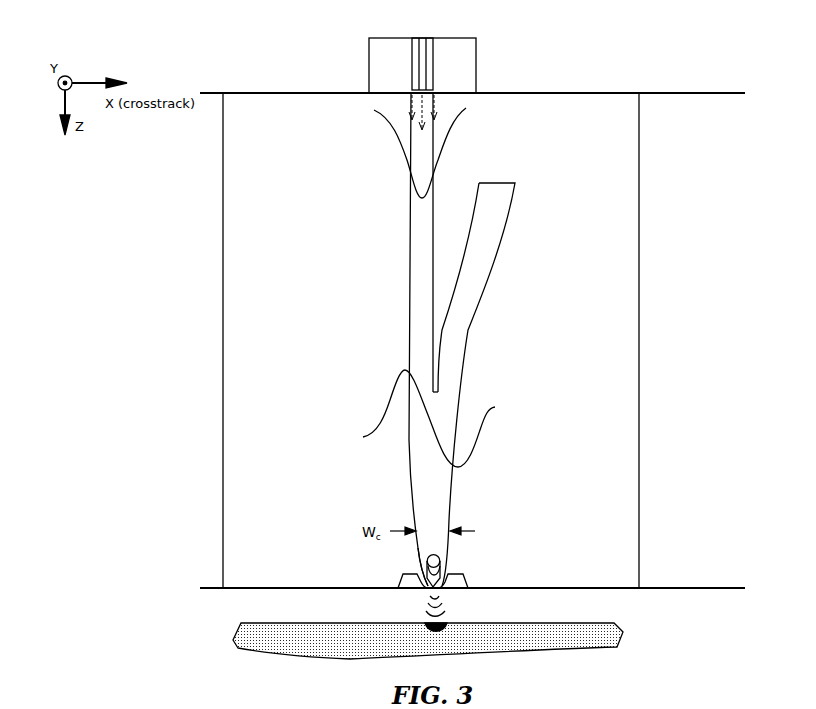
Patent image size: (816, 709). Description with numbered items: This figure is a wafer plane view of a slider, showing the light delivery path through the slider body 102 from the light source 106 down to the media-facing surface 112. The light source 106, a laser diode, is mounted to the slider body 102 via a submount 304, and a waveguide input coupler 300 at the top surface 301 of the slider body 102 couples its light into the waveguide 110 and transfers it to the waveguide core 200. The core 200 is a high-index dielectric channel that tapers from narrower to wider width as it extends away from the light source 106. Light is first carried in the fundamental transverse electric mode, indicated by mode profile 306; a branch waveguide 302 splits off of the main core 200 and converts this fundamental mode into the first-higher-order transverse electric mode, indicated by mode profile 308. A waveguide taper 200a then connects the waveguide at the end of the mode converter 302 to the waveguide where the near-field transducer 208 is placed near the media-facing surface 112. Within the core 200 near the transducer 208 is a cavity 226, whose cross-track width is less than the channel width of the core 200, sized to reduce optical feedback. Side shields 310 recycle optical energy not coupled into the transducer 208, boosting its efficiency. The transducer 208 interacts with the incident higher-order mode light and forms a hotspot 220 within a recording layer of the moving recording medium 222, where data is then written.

The slider body 102 is at (565, 92).
The light source 106 is at (435, 70).
The waveguide 110 is at (340, 298).
The media-facing surface 112 is at (693, 592).
The waveguide core 200 is at (409, 252).
The waveguide taper 200a is at (413, 490).
The near-field transducer 208 is at (428, 566).
The hotspot 220 is at (434, 636).
The recording medium 222 is at (593, 644).
The cavity 226 is at (441, 561).
The waveguide input coupler 300 is at (412, 110).
The top surface 301 is at (718, 95).
The branch waveguide 302 is at (497, 200).
The submount 304 is at (369, 52).
The mode profile 306 is at (452, 120).
The mode profile 308 is at (488, 417).
The side shields 310 is at (404, 578).